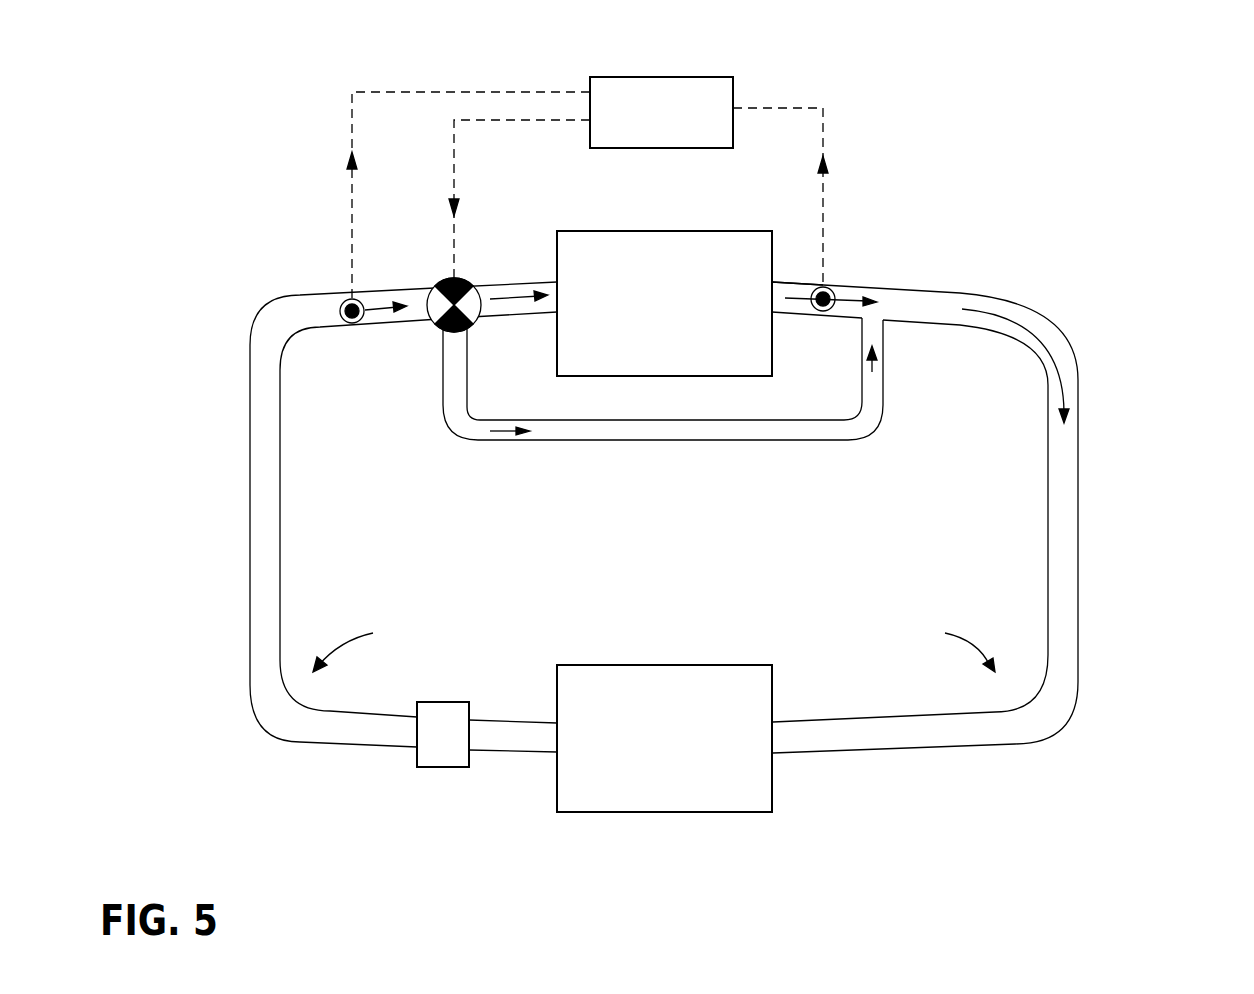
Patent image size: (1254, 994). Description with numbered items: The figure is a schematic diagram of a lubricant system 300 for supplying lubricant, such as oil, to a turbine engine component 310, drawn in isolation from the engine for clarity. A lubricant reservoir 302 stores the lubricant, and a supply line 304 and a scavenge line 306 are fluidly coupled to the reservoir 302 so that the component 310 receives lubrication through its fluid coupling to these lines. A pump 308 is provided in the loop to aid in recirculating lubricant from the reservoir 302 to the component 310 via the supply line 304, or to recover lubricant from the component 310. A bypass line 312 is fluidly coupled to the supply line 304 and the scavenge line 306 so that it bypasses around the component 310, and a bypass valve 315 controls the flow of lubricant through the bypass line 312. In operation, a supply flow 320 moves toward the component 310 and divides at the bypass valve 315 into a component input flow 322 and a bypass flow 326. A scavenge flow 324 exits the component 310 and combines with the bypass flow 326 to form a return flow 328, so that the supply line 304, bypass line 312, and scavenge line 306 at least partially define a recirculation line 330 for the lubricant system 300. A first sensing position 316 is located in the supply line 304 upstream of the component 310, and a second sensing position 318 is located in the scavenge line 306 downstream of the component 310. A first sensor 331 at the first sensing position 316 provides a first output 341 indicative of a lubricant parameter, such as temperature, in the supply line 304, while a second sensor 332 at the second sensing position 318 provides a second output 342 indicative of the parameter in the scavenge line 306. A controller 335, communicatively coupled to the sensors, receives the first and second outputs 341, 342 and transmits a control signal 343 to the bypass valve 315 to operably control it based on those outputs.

The lubricant system 300 is at (1205, 41).
The lubricant reservoir 302 is at (651, 753).
The supply line 304 is at (268, 555).
The scavenge line 306 is at (1057, 523).
The pump 308 is at (440, 767).
The turbine engine component 310 is at (651, 315).
The bypass line 312 is at (651, 427).
The bypass valve 315 is at (468, 283).
The first sensing position 316 is at (365, 323).
The second sensing position 318 is at (817, 312).
The supply flow 320 is at (285, 330).
The component input flow 322 is at (523, 298).
The scavenge flow 324 is at (818, 297).
The bypass flow 326 is at (463, 433).
The return flow 328 is at (1053, 337).
The recirculation line 330 is at (654, 646).
The first sensor 331 is at (350, 297).
The second sensor 332 is at (827, 285).
The controller 335 is at (646, 124).
The first output 341 is at (350, 188).
The second output 342 is at (823, 188).
The control signal 343 is at (452, 173).